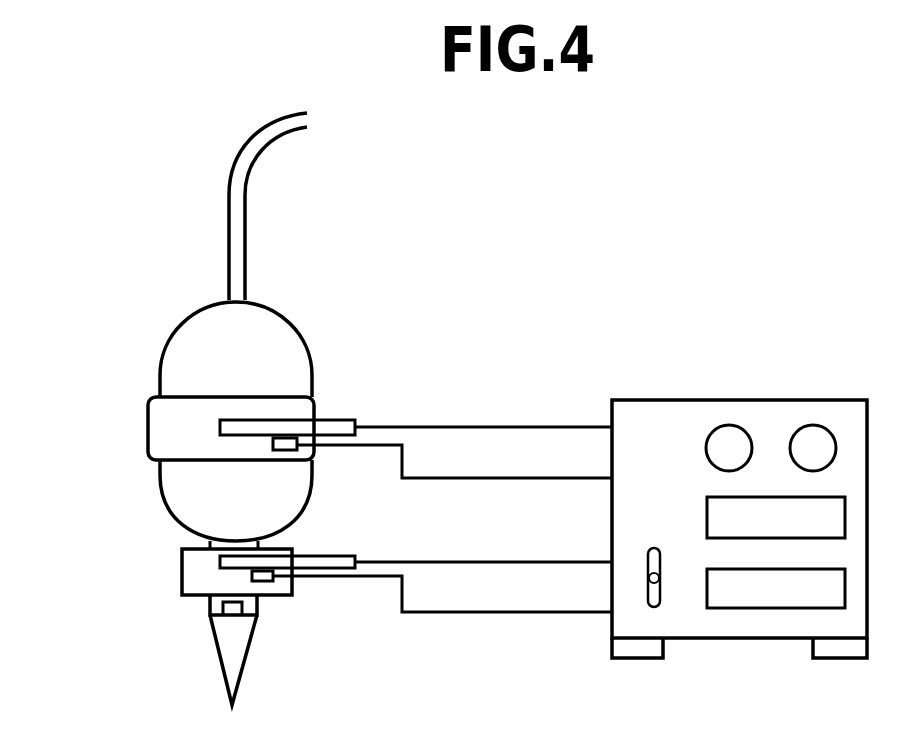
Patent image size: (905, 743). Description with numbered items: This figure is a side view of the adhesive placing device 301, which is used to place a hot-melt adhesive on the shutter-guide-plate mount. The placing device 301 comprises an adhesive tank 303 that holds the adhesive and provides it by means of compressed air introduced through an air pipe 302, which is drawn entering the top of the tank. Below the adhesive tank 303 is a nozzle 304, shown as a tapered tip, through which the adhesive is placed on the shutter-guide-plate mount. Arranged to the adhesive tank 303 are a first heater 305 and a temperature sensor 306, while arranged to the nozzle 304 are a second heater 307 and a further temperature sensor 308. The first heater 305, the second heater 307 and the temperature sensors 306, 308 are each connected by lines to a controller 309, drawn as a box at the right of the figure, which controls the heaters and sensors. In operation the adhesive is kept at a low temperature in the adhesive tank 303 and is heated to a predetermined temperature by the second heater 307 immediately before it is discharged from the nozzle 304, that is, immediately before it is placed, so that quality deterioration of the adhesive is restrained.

The placing device 301 is at (162, 300).
The air pipe 302 is at (238, 246).
The adhesive tank 303 is at (165, 365).
The nozzle 304 is at (222, 647).
The first heater 305 is at (292, 425).
The temperature sensor 306 is at (290, 440).
The second heater 307 is at (280, 558).
The temperature sensor 308 is at (290, 596).
The controller 309 is at (695, 400).